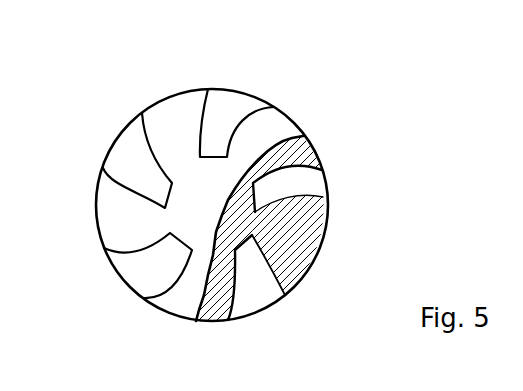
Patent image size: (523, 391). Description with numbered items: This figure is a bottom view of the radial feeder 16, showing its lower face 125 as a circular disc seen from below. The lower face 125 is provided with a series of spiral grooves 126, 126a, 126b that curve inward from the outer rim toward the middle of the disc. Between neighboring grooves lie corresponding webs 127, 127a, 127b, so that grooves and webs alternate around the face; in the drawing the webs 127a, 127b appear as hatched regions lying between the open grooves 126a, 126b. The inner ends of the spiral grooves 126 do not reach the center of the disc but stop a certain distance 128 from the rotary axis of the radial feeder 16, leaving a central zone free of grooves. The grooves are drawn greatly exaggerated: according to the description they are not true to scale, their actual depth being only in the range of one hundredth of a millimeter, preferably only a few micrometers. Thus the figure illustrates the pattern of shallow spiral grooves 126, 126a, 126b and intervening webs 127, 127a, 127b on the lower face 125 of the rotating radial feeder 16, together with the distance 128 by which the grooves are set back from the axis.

The radial feeder 16 is at (148, 74).
The lower face 125 is at (187, 205).
The spiral groove 126 is at (248, 104).
The spiral groove 126a is at (307, 180).
The spiral groove 126b is at (257, 297).
The web 127 is at (276, 128).
The web 127a is at (300, 262).
The web 127b is at (202, 323).
The distance 128 is at (323, 197).